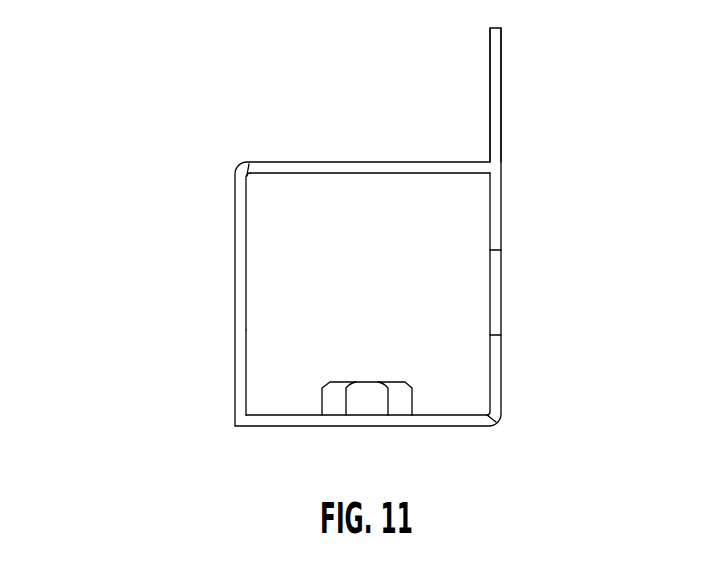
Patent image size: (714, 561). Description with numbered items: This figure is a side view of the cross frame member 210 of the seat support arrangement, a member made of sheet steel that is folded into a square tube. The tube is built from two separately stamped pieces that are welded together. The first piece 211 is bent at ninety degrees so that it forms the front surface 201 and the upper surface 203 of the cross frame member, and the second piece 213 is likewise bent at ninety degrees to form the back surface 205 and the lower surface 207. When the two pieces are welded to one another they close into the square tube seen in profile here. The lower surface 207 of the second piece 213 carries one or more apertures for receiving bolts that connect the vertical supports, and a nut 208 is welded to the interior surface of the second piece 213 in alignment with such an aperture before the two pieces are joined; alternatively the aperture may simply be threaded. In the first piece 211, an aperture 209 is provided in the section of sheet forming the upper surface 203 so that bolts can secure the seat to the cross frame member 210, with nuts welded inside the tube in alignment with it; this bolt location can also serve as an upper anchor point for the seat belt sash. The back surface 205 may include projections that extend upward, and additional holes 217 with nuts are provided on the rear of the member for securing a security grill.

The cross frame member 210 is at (183, 155).
The upper surface 203 is at (291, 161).
The aperture 209 is at (495, 103).
The back surface 205 is at (501, 195).
The additional holes 217 is at (495, 287).
The second piece 213 is at (495, 382).
The lower surface 207 is at (470, 427).
The front surface 201 is at (235, 303).
The first piece 211 is at (239, 368).
The nut 208 is at (363, 405).